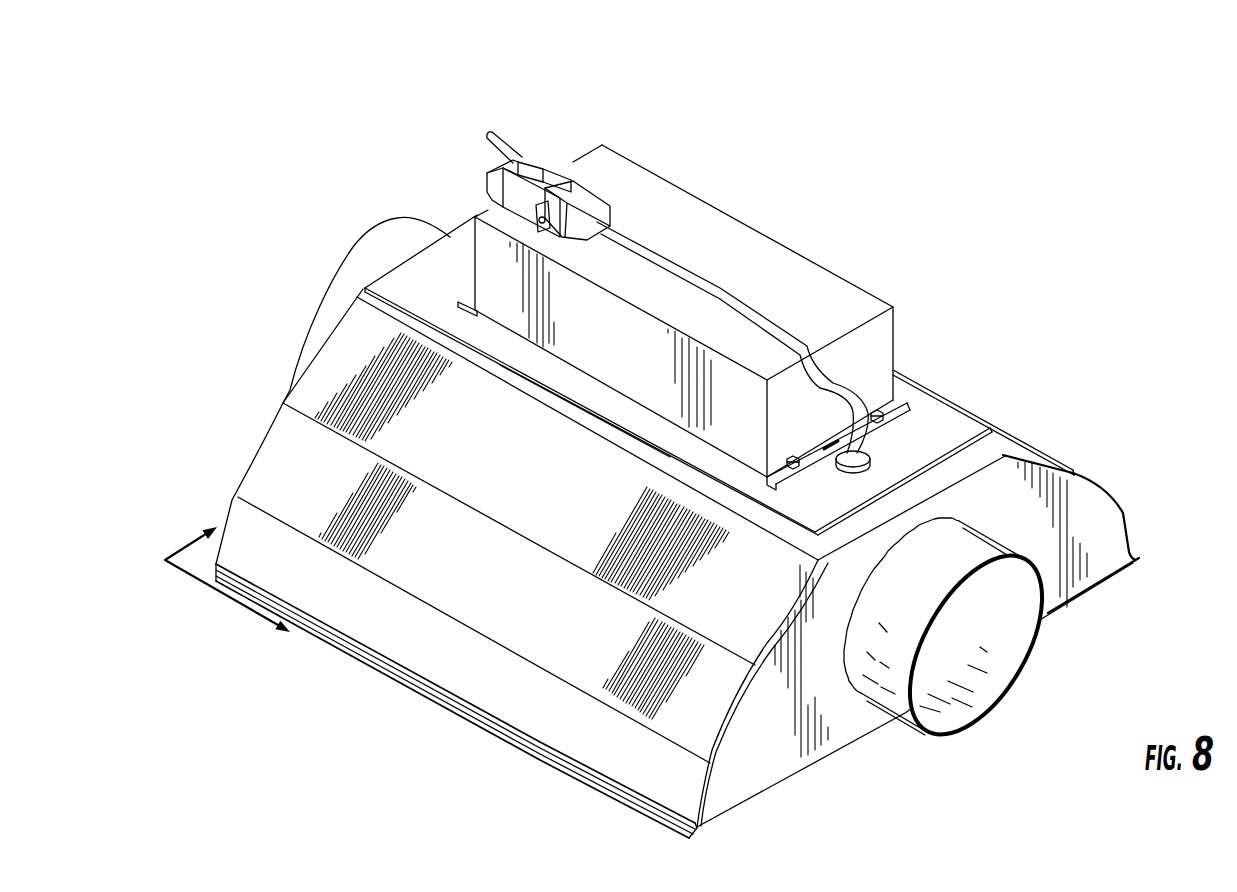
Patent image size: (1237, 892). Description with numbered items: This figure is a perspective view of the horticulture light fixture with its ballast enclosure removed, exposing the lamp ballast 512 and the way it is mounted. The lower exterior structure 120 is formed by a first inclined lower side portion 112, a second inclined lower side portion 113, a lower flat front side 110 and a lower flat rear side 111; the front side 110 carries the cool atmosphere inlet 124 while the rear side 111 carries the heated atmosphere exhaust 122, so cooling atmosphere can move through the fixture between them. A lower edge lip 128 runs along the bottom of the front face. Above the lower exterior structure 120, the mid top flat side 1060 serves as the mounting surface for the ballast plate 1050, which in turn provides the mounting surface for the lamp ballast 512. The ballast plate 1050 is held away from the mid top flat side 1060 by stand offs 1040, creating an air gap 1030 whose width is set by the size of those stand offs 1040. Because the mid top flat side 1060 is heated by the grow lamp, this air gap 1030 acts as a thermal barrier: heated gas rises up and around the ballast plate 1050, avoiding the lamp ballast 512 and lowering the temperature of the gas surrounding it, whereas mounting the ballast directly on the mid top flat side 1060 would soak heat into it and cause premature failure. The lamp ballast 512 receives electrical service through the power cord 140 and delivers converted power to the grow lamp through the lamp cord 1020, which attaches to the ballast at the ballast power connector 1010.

The lower flat front side 110 is at (285, 395).
The lower flat rear side 111 is at (763, 756).
The first inclined lower side portion 112 is at (522, 620).
The second inclined lower side portion 113 is at (1048, 458).
The lower exterior structure 120 is at (211, 577).
The heated atmosphere exhaust 122 is at (924, 598).
The cool atmosphere inlet 124 is at (389, 266).
The housing lip 128 is at (442, 722).
The power cord 140 is at (496, 142).
The lamp ballast 512 is at (615, 354).
The ballast power connector 1010 is at (602, 145).
The lamp cord 1020 is at (704, 285).
The air gap 1030 is at (506, 381).
The stand offs 1040 is at (745, 497).
The ballast plate 1050 is at (740, 472).
The mid top flat side 1060 is at (403, 315).